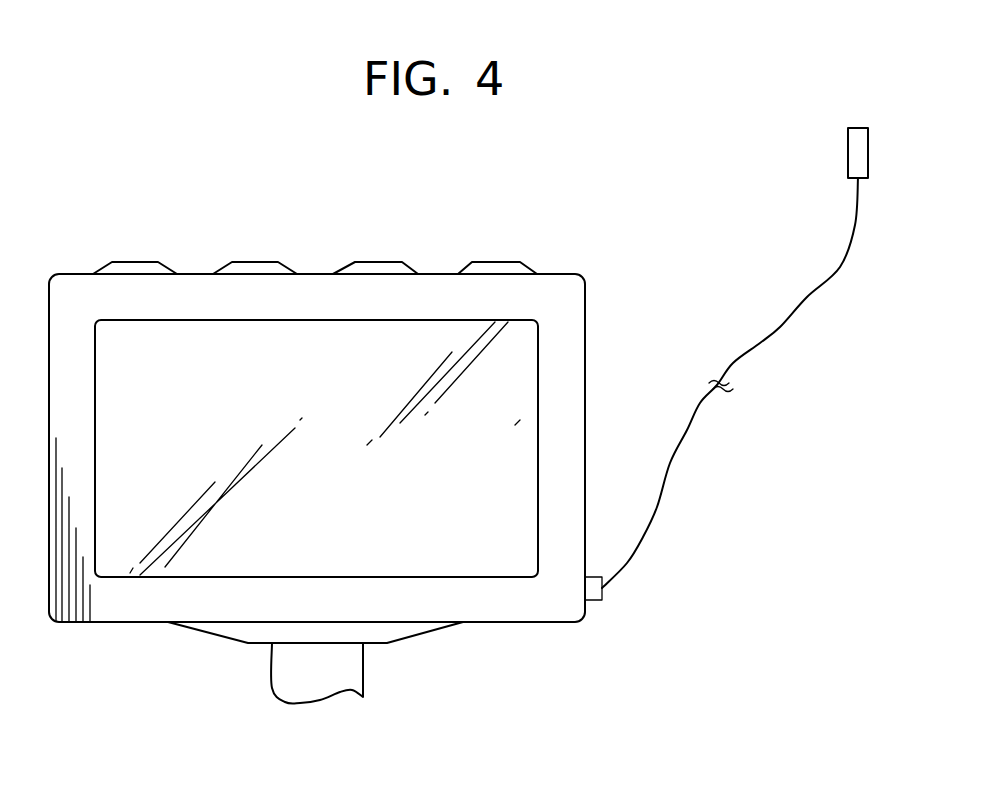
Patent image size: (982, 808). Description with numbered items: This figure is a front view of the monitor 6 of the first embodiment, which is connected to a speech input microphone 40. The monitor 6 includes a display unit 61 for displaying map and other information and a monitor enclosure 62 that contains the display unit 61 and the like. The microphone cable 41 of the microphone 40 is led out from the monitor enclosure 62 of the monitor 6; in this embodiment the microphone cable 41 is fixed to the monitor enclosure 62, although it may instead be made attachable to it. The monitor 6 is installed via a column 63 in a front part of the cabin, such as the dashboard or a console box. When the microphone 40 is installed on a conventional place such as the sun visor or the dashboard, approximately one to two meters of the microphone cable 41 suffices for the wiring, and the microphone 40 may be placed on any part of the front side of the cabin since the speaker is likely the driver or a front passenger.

The monitor 6 is at (567, 249).
The speech input microphone 40 is at (848, 150).
The microphone cable 41 is at (780, 323).
The display unit 61 is at (515, 423).
The monitor enclosure 62 is at (557, 345).
The column 63 is at (343, 672).